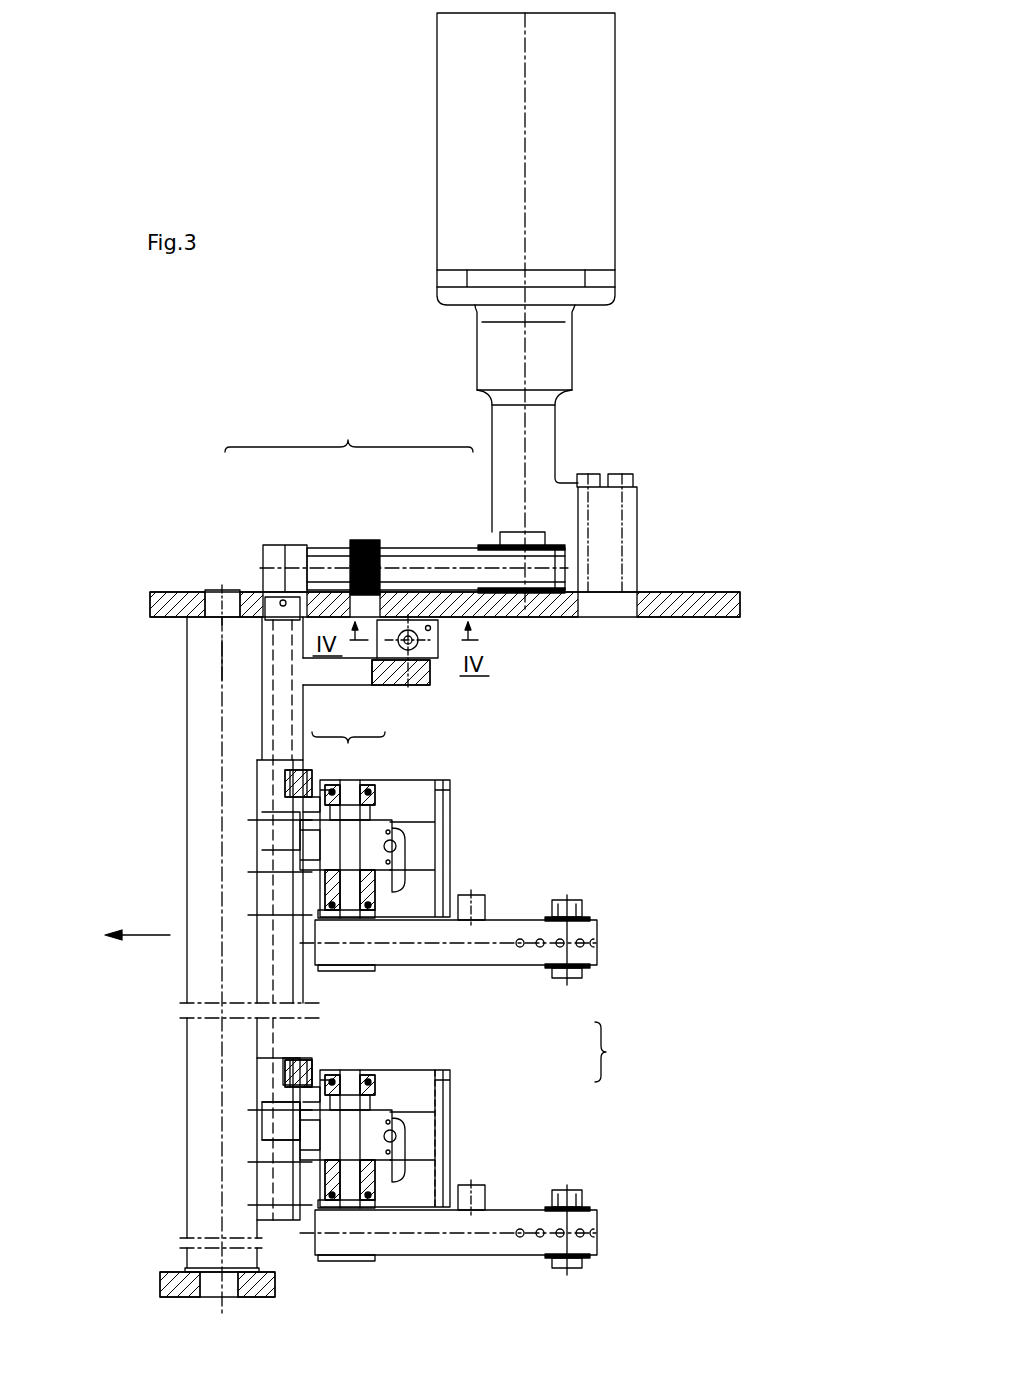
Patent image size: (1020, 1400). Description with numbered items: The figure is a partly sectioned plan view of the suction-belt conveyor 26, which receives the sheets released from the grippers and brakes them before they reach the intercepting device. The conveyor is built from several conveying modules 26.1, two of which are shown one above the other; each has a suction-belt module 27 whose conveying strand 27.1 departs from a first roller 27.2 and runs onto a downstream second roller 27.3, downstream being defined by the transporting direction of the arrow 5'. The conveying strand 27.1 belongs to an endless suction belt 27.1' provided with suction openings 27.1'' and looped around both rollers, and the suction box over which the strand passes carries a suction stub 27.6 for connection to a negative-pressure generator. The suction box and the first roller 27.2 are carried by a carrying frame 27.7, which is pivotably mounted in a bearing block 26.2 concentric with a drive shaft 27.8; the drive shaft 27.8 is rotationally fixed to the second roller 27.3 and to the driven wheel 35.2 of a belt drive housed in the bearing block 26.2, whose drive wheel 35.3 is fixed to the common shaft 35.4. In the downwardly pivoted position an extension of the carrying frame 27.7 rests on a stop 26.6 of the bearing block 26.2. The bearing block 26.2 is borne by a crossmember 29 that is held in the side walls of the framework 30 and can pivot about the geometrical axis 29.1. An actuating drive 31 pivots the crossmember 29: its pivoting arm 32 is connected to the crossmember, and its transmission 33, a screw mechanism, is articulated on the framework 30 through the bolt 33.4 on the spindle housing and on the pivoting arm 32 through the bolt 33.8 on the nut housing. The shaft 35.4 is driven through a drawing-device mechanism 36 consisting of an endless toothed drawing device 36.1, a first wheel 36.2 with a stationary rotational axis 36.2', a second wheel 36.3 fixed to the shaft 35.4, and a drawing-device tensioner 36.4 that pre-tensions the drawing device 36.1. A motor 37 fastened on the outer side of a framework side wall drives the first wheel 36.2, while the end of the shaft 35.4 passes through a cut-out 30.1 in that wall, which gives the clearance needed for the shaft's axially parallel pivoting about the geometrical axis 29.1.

The motor 37 is at (600, 190).
The drawing-device mechanism 36 is at (395, 501).
The endless drawing device 36.1 is at (330, 550).
The first wheel 36.2 is at (502, 532).
The stationary rotational axis 36.2' is at (655, 533).
The second wheel 36.3 is at (276, 545).
The drawing-device tensioner 36.4 is at (368, 548).
The framework 30 is at (172, 592).
The cut-out 30.1 is at (250, 590).
The crossmember 29 is at (200, 830).
The geometrical axis 29.1 is at (205, 660).
The shaft 35.4 is at (282, 718).
The arrow 5' is at (137, 907).
The bearing block 26.2 is at (270, 932).
The stop 26.6 is at (285, 1073).
The drive wheel 35.3 is at (270, 1098).
The drive shaft 27.8 is at (300, 1170).
The bolt 33.4 is at (445, 620).
The bolt 33.8 is at (443, 683).
The pivoting arm 32 is at (322, 676).
The transmission 33 is at (368, 665).
The actuating drive 31 is at (348, 752).
The carrying frame 27.7 is at (447, 818).
The suction stub 27.6 is at (470, 895).
The suction-belt module 27 is at (514, 914).
The first roller 27.2 is at (585, 968).
The second roller 27.3 is at (338, 970).
The conveying strand 27.1 is at (450, 1111).
The conveying module 26.1 is at (530, 986).
The suction-belt conveyor 26 is at (621, 1052).
The driven wheel 35.2 is at (445, 1140).
The suction openings 27.1'' is at (645, 1206).
The endless suction belt 27.1' is at (652, 1241).